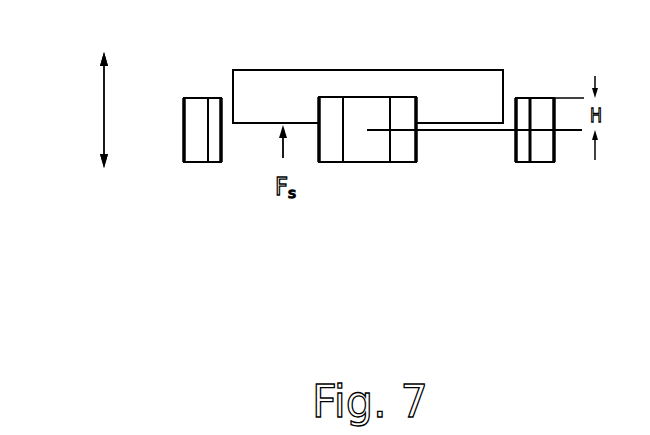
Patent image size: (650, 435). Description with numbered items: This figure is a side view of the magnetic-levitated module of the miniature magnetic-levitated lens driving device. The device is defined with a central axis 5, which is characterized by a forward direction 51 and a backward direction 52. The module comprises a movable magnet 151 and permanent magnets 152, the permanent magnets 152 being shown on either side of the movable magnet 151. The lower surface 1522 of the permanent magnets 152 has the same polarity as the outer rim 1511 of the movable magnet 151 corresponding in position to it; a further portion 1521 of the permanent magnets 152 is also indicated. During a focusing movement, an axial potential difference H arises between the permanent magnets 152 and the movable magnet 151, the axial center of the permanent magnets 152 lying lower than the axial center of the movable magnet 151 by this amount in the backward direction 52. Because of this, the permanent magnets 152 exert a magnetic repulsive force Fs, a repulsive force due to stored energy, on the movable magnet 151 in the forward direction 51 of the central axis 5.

The central axis 5 is at (107, 108).
The forward direction 51 is at (104, 54).
The backward direction 52 is at (104, 164).
The movable magnet 151 is at (475, 68).
The outer rim 1511 is at (487, 83).
The permanent magnets 152 is at (372, 172).
The first portion of stopper block 1521 is at (183, 135).
The lower surface 1522 is at (222, 145).